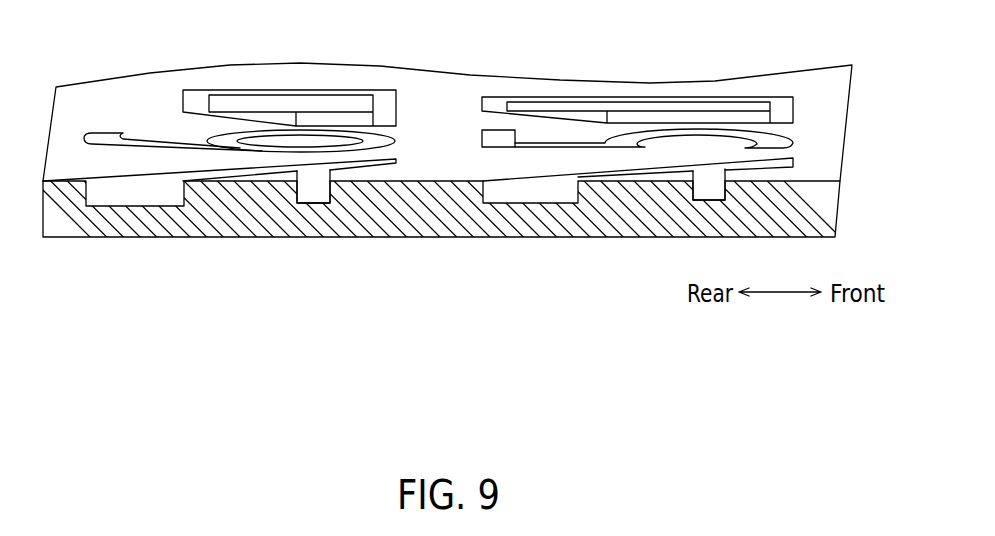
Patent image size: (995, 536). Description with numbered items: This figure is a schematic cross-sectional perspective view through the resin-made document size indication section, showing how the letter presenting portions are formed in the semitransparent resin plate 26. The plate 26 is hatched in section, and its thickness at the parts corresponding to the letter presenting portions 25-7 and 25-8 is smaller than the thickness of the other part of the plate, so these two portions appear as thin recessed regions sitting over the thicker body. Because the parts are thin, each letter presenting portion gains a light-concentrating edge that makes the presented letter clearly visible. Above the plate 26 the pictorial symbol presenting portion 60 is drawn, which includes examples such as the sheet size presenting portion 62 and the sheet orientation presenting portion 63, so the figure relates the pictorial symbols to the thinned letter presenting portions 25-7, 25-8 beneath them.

The pictorial symbol presenting portion 60 is at (258, 88).
The sheet orientation presenting portion 63 is at (438, 81).
The sheet size presenting portion 62 is at (70, 137).
The semitransparent resin plate 26 is at (827, 205).
The letter presenting portion 25-7 is at (148, 175).
The letter presenting portion 25-8 is at (513, 178).